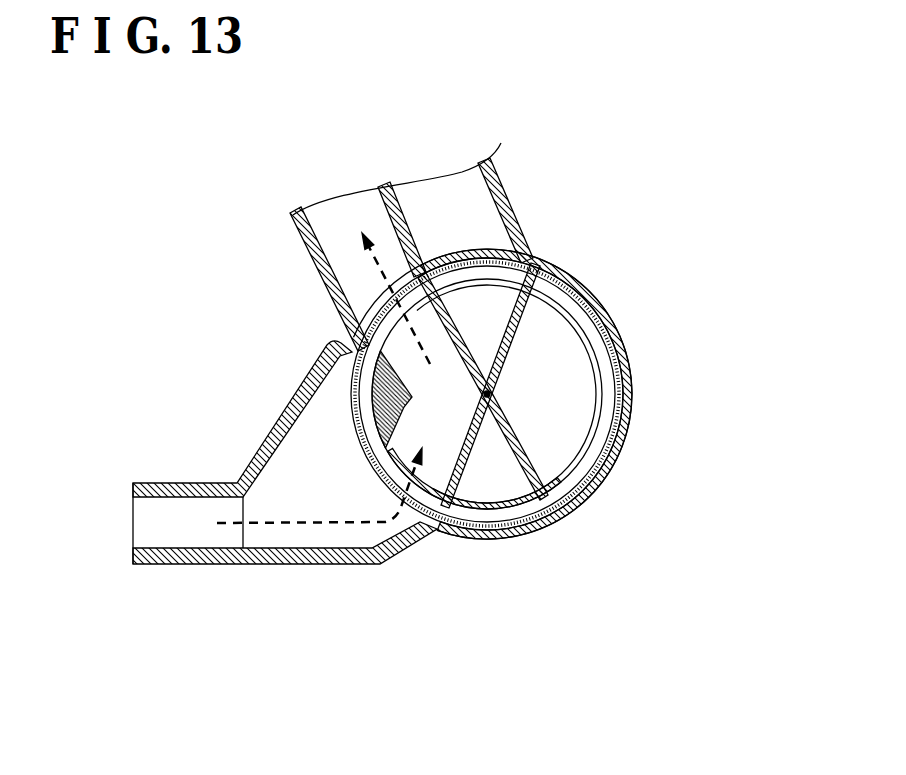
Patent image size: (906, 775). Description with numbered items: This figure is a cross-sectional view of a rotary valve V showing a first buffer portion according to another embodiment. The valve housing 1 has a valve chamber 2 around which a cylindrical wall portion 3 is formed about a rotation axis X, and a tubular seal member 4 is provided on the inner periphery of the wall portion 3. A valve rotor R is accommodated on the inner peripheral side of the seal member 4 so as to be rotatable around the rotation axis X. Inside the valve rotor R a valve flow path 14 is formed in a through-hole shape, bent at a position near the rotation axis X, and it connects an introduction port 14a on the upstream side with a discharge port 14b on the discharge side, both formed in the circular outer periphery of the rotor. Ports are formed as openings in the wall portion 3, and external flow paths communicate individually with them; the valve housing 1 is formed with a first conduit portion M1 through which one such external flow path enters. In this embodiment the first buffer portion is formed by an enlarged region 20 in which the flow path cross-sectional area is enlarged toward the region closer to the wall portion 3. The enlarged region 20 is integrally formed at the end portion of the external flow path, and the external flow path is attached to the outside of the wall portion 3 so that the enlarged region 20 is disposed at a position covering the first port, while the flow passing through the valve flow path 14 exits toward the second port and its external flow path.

The valve housing 1 is at (614, 322).
The valve chamber 2 is at (484, 256).
The wall portion 3 is at (602, 478).
The seal member 4 is at (561, 314).
The valve flow path 14 is at (453, 378).
The introduction port 14a is at (416, 503).
The discharge port 14b is at (371, 330).
The enlarged region 20 is at (287, 400).
The rotation axis X is at (495, 393).
The rotary valve V is at (660, 242).
The valve rotor R is at (520, 510).
The first conduit portion M1 is at (172, 562).